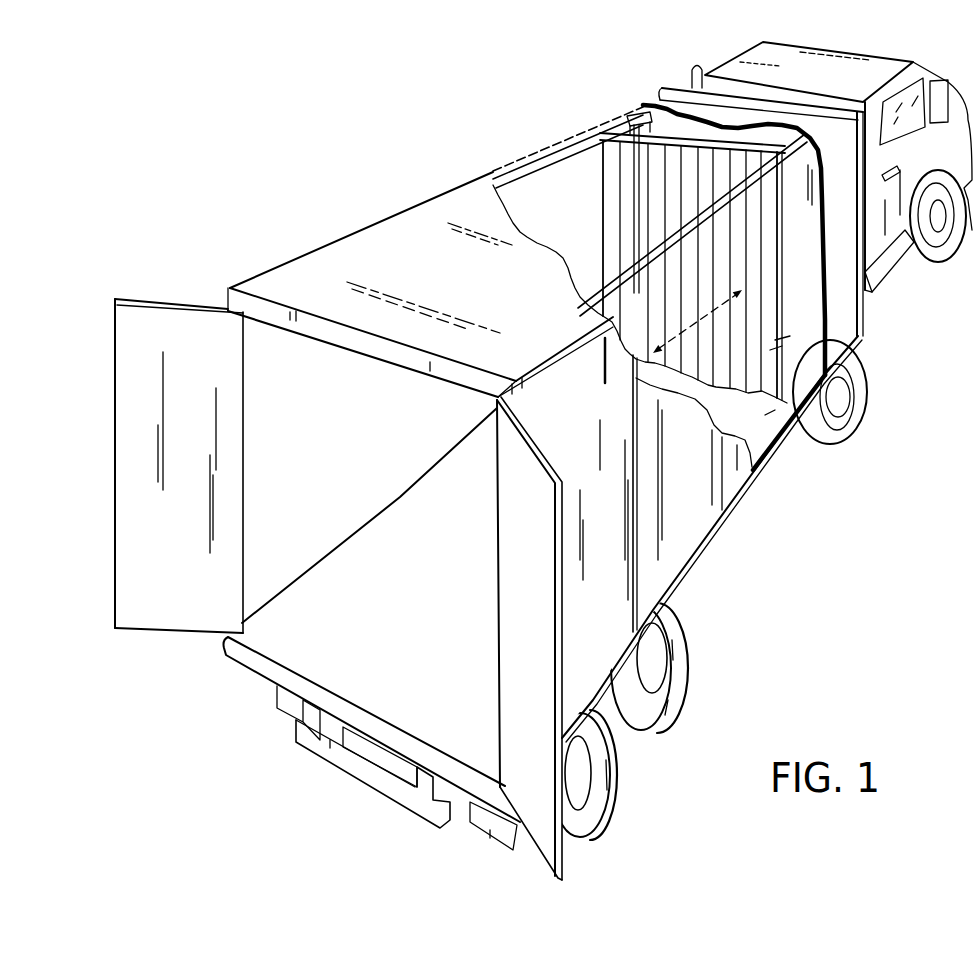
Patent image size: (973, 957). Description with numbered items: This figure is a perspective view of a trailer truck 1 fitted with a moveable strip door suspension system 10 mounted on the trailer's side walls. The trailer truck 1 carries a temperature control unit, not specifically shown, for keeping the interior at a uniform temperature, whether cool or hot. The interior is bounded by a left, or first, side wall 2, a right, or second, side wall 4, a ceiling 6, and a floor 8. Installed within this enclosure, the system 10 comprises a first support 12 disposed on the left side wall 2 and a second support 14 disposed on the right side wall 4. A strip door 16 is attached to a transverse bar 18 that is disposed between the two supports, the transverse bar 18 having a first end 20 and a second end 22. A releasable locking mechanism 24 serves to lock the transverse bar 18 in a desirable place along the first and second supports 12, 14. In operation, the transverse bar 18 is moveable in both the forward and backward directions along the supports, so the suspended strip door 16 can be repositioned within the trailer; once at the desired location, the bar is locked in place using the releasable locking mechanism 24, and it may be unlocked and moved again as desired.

The trailer truck 1 is at (373, 110).
The left side wall 2 is at (254, 349).
The right side wall 4 is at (617, 605).
The ceiling 6 is at (367, 360).
The floor 8 is at (287, 643).
The moveable strip door suspension system 10 is at (806, 333).
The first support 12 is at (598, 138).
The second support 14 is at (625, 262).
The strip door 16 is at (772, 377).
The transverse bar 18 is at (730, 146).
The first end 20 is at (652, 128).
The second end 22 is at (772, 131).
The releasable locking mechanism 24 is at (640, 112).